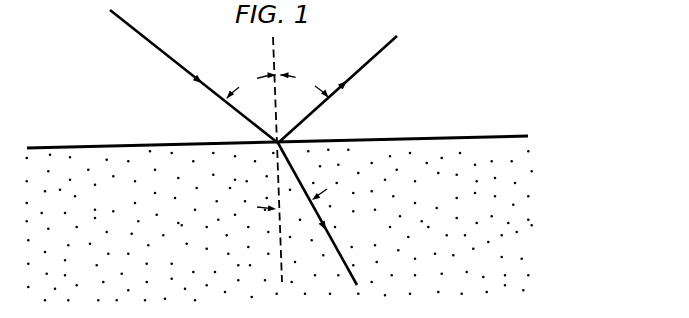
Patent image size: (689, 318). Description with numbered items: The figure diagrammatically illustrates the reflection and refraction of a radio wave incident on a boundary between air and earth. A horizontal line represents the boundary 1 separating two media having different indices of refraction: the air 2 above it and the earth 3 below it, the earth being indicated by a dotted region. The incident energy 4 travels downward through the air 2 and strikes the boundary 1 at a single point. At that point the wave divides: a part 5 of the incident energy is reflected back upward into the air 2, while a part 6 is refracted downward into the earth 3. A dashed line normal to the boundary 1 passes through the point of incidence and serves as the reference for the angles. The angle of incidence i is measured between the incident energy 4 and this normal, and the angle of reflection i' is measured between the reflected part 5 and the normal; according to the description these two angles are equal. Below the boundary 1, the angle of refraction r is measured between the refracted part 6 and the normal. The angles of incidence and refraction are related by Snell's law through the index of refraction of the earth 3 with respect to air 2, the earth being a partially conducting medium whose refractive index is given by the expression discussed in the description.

The boundary 1 is at (408, 138).
The air 2 is at (108, 126).
The earth 3 is at (78, 212).
The incident energy 4 is at (182, 68).
The reflected part 5 is at (373, 62).
The refracted part 6 is at (333, 238).
The angle of incidence i is at (251, 85).
The angle of reflection i' is at (304, 85).
The angle of refraction r is at (292, 203).